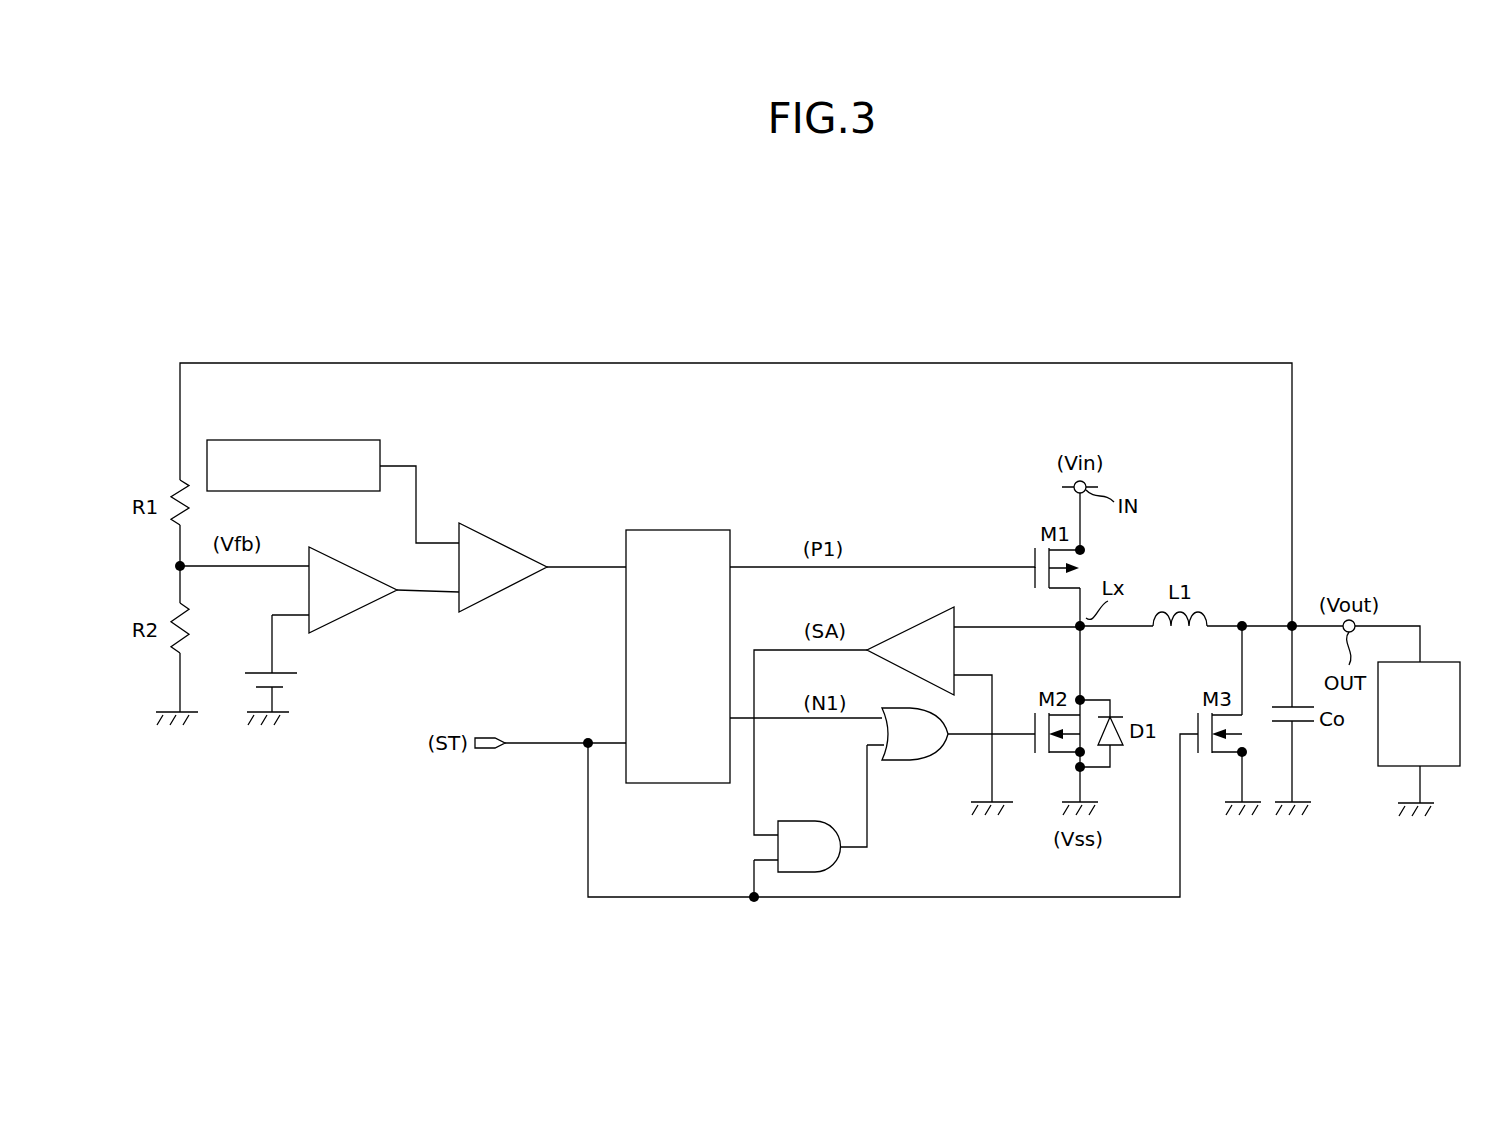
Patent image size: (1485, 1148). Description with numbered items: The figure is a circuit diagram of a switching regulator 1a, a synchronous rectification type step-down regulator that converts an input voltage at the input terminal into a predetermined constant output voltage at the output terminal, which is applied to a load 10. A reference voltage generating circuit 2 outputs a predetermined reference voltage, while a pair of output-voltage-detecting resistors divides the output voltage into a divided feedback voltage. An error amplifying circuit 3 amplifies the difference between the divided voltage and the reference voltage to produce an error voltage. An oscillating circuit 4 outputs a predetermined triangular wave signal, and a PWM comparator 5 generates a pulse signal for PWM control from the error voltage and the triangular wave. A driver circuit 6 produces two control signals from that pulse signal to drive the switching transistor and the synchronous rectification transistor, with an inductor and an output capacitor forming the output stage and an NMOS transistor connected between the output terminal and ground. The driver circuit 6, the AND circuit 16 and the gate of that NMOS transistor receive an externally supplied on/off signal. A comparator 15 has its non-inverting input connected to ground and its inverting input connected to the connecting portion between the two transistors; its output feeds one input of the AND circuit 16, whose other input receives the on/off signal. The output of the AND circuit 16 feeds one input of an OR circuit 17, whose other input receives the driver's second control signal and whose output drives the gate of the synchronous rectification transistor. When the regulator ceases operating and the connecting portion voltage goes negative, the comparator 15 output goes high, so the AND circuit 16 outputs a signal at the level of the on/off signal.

The switching regulator 1a is at (843, 346).
The reference voltage generating circuit 2 is at (296, 680).
The error amplifying circuit 3 is at (346, 562).
The oscillating circuit 4 is at (300, 440).
The PWM comparator 5 is at (503, 540).
The driver circuit 6 is at (678, 530).
The load 10 is at (1435, 662).
The comparator 15 is at (906, 618).
The AND circuit 16 is at (796, 821).
The OR circuit 17 is at (905, 760).